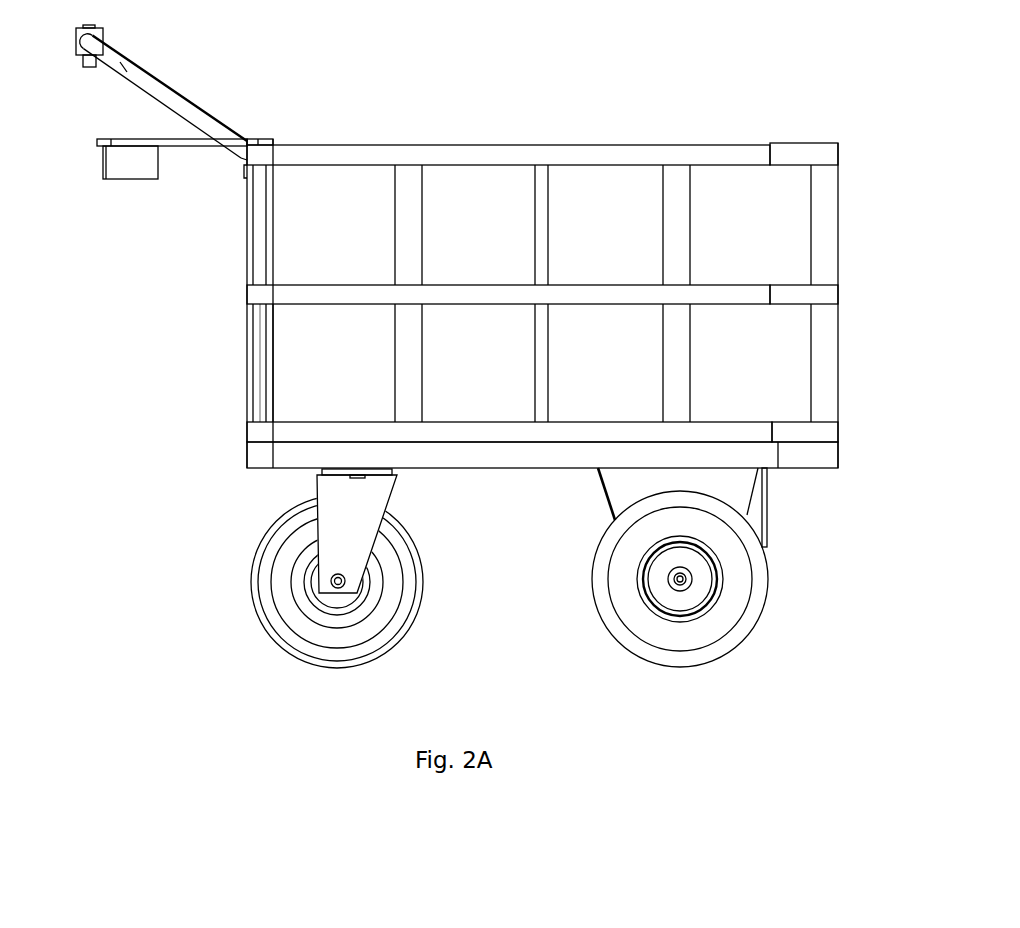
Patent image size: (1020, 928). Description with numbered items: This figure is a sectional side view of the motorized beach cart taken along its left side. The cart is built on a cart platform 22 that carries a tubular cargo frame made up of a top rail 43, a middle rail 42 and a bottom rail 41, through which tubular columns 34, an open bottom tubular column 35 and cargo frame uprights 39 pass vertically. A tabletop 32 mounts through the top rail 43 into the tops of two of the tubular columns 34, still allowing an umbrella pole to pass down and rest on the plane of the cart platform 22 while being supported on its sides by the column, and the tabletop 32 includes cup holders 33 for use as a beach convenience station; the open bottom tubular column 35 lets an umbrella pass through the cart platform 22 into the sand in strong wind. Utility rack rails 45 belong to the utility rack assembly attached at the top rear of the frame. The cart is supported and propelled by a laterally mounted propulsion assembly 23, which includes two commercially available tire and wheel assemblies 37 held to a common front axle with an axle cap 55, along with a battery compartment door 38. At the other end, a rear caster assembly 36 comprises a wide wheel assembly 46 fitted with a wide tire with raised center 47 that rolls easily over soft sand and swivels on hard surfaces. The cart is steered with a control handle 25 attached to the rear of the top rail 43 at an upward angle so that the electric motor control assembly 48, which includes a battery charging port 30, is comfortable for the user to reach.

The cart platform 22 is at (262, 458).
The propulsion assembly 23 is at (616, 491).
The control handle 25 is at (162, 92).
The battery charging port 30 is at (87, 67).
The tabletop 32 is at (172, 147).
The cup holders 33 is at (147, 173).
The tubular columns 34 is at (410, 363).
The open bottom tubular column 35 is at (275, 363).
The rear caster assembly 36 is at (386, 488).
The tire and wheel assemblies 37 is at (773, 588).
The battery compartment door 38 is at (767, 512).
The cargo frame uprights 39 is at (260, 352).
The bottom rail 41 is at (802, 430).
The middle rail 42 is at (803, 293).
The top rail 43 is at (805, 155).
The utility rack rails 45 is at (423, 211).
The wide wheel assembly 46 is at (372, 585).
The wide tire with raised center 47 is at (263, 572).
The electric motor control assembly 48 is at (106, 30).
The axle cap 55 is at (336, 583).